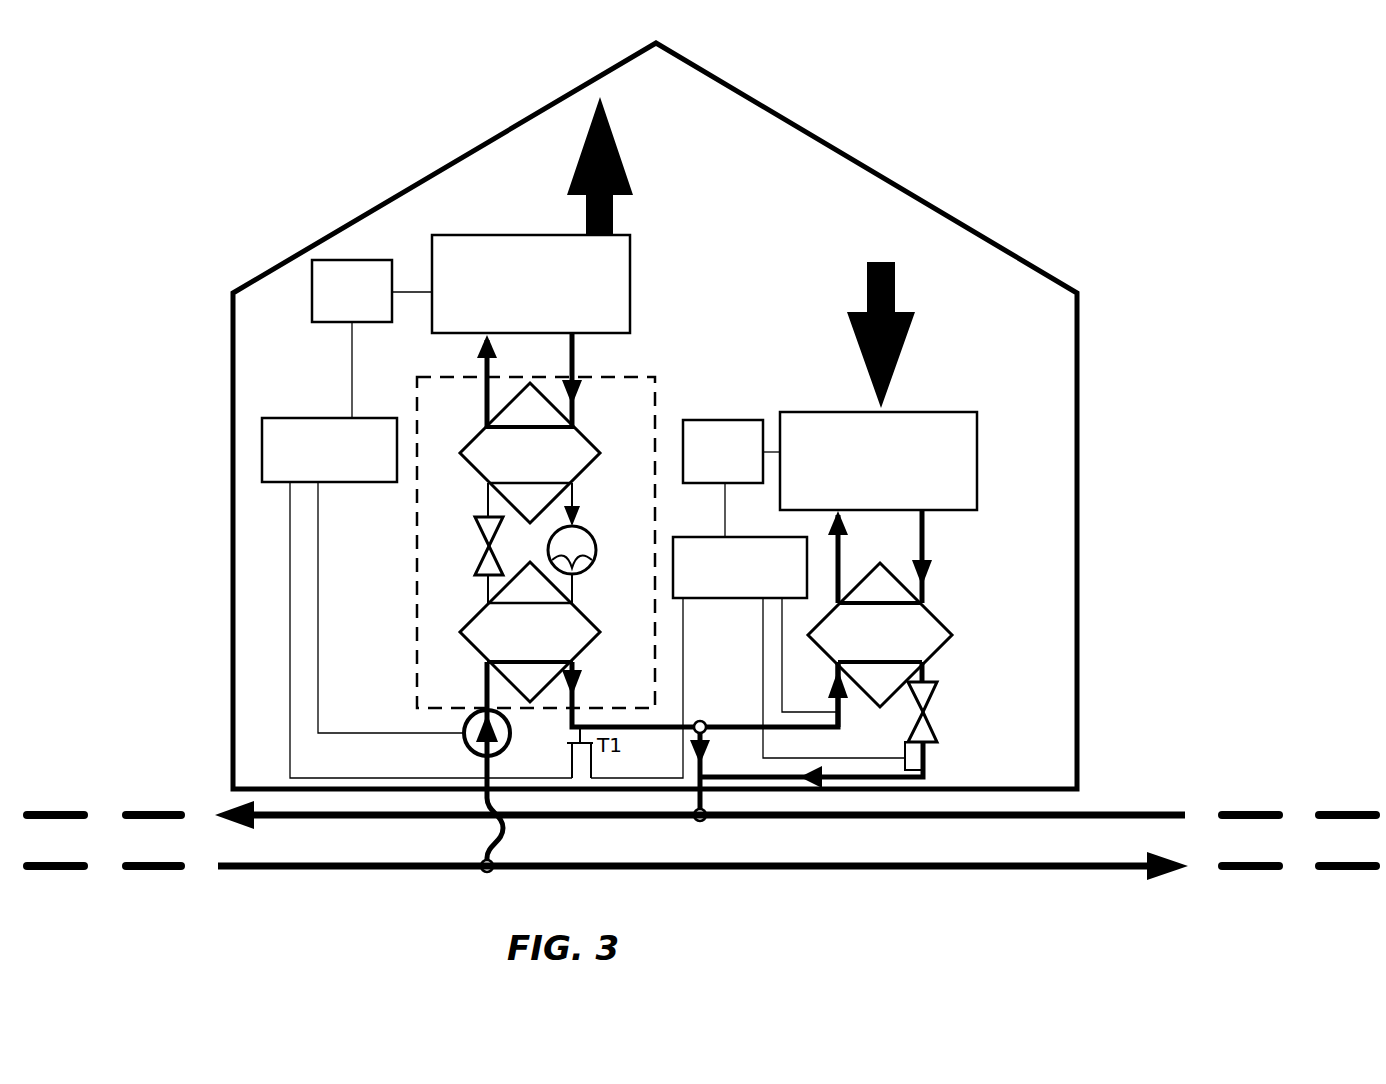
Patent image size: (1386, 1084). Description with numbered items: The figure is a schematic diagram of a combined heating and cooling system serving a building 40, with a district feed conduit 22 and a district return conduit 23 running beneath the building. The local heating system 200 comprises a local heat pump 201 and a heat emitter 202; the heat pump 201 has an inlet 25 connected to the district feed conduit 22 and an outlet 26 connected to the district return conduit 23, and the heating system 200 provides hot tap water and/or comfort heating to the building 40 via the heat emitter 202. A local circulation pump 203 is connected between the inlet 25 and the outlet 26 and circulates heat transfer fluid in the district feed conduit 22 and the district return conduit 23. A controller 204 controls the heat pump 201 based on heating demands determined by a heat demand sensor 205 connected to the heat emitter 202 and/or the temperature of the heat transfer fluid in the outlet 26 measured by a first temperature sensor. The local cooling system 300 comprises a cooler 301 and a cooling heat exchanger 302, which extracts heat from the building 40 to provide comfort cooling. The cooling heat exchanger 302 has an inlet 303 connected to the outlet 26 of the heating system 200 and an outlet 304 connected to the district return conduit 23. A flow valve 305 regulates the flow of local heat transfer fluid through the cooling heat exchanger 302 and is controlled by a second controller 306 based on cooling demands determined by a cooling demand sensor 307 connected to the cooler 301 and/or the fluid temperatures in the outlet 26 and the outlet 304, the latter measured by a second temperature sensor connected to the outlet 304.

The building 40 is at (252, 328).
The local heating system 200 is at (430, 227).
The local heat pump 201 is at (430, 565).
The heat emitter 202 is at (478, 248).
The local circulation pump 203 is at (465, 740).
The controller 204 is at (273, 430).
The heat demand sensor 205 is at (322, 283).
The inlet 25 is at (483, 662).
The outlet 26 is at (574, 664).
The local cooling system 300 is at (938, 303).
The cooler 301 is at (925, 437).
The cooling heat exchanger 302 is at (935, 635).
The inlet 303 is at (838, 668).
The outlet 304 is at (923, 662).
The flow valve 305 is at (937, 694).
The second controller 306 is at (673, 545).
The cooling demand sensor 307 is at (710, 433).
The district feed conduit 22 is at (348, 868).
The district return conduit 23 is at (1125, 813).